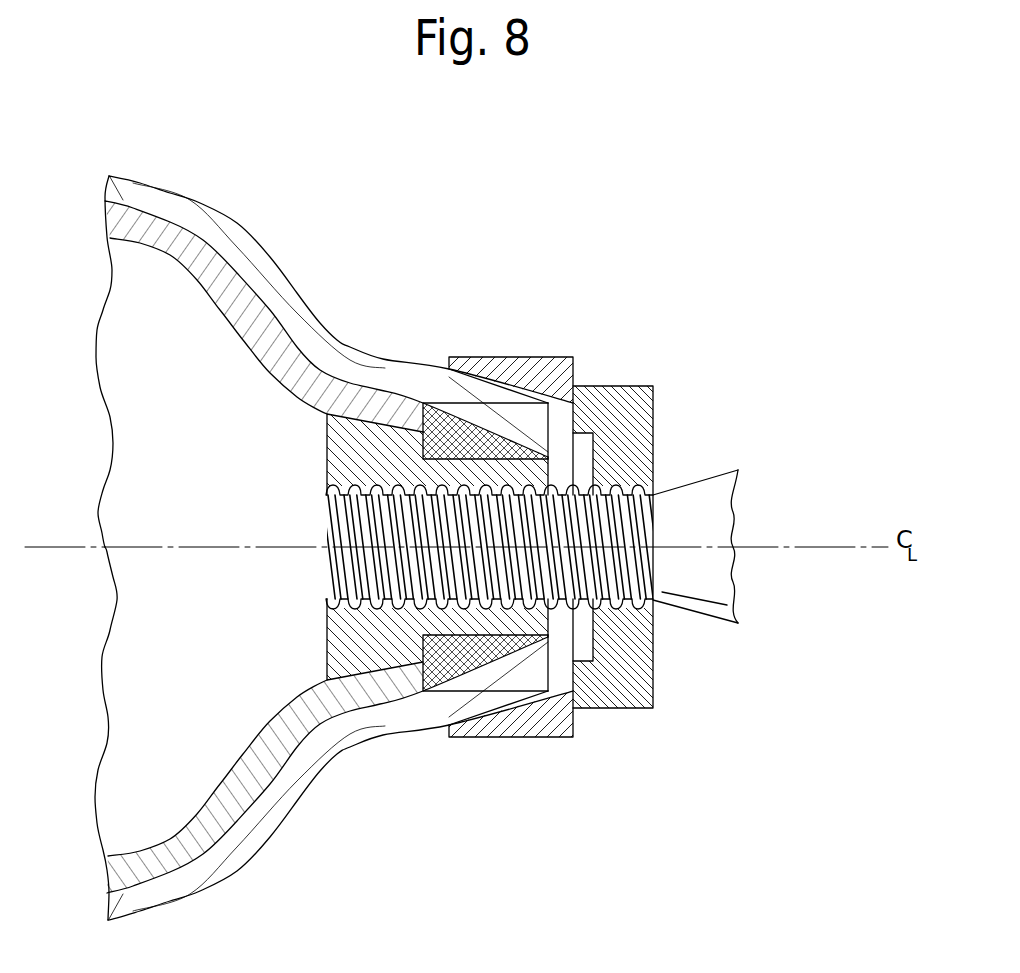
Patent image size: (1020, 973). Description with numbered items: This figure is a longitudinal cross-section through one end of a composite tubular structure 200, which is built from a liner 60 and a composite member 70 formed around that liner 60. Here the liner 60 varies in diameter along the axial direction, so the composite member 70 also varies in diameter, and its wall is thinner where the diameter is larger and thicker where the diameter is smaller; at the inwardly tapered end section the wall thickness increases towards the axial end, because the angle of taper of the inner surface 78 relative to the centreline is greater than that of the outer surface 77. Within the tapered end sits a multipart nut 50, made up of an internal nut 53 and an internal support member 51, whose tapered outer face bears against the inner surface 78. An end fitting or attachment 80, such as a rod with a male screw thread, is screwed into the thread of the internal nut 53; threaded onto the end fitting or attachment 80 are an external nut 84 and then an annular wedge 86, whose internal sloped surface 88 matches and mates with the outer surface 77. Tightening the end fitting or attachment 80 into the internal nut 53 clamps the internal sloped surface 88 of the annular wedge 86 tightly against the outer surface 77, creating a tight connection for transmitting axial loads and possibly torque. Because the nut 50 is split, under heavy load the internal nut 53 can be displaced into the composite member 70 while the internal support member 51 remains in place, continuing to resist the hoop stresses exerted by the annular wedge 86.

The composite tubular structure 200 is at (134, 156).
The multipart nut 50 is at (294, 648).
The internal support member 51 is at (453, 430).
The internal nut 53 is at (393, 447).
The liner 60 is at (215, 275).
The composite member 70 is at (363, 735).
The outer surface of the inwardly tapered section 77 is at (534, 698).
The inner surface of the inwardly tapered section 78 is at (455, 683).
The end fitting or attachment 80 is at (707, 503).
The external nut 84 is at (637, 407).
The annular wedge 86 is at (522, 365).
The internal sloped surface 88 is at (518, 712).